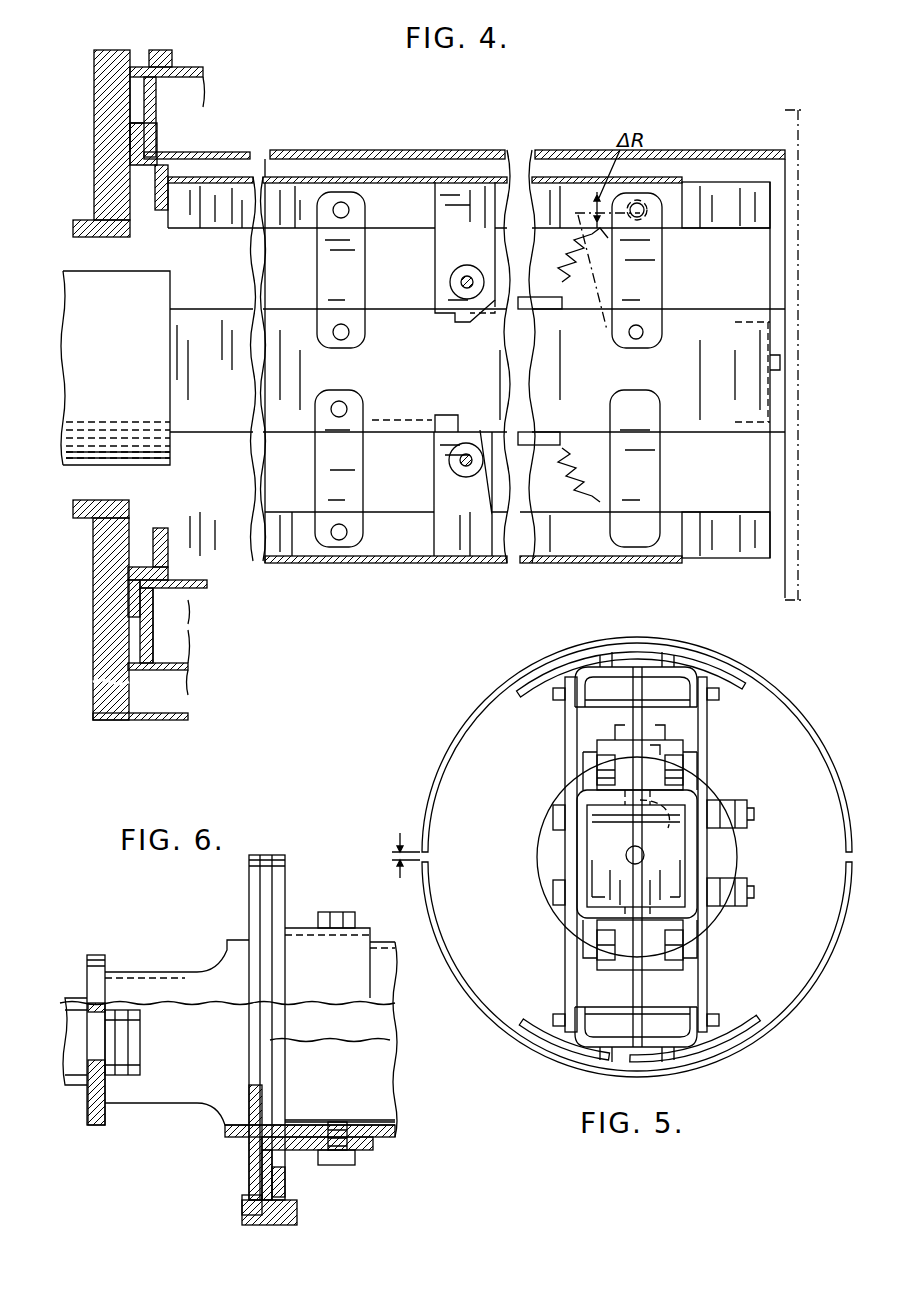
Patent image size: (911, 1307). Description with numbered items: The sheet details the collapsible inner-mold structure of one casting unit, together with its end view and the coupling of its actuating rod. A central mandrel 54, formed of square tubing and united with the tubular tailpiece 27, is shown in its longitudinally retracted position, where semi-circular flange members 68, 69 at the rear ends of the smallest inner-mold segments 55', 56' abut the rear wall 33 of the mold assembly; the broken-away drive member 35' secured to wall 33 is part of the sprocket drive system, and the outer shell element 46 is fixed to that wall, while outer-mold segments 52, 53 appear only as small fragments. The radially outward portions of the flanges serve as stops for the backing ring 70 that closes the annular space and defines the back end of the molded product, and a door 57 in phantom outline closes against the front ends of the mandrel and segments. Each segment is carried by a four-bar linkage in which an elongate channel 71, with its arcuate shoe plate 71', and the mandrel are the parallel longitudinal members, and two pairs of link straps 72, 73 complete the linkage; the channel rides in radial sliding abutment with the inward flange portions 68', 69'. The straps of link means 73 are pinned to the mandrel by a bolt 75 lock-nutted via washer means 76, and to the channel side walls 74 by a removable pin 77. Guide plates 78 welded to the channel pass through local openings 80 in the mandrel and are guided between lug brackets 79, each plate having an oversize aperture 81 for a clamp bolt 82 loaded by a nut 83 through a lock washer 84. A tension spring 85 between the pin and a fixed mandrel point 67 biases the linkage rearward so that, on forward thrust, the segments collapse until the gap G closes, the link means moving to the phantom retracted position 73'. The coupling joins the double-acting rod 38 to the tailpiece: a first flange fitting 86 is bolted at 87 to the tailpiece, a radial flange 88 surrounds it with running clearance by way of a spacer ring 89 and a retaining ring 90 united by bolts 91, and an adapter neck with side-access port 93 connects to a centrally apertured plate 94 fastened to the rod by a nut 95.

In FIG. 4, the tubular tailpiece 27 is at (118, 366).
In FIG. 5, the tubular tailpiece 27 is at (566, 910).
In FIG. 6, the tubular tailpiece 27 is at (385, 1137).
In FIG. 4, the rear wall 33 is at (94, 72).
In FIG. 4, the drive member 35' is at (89, 373).
In FIG. 6, the double-acting rod 38 is at (70, 998).
In FIG. 4, the outer shell element 46 is at (140, 720).
In FIG. 4, the outer-mold segment 52 is at (153, 665).
In FIG. 4, the outer-mold segment 53 is at (200, 67).
In FIG. 4, the central mandrel 54 is at (210, 309).
In FIG. 5, the central mandrel 54 is at (660, 902).
In FIG. 4, the inner-mold segment 55' is at (527, 138).
In FIG. 5, the inner-mold segment 55' is at (637, 744).
In FIG. 4, the inner-mold segment 56' is at (195, 598).
In FIG. 5, the inner-mold segment 56' is at (637, 969).
In FIG. 4, the door 57 is at (800, 224).
In FIG. 4, the pivot point 67 is at (790, 363).
In FIG. 5, the pivot point 67 is at (645, 856).
In FIG. 4, the semi-circular flange member 68 is at (104, 144).
In FIG. 4, the radially inward flange portion 68' is at (188, 191).
In FIG. 4, the semi-circular flange member 69 is at (109, 592).
In FIG. 4, the radially inward flange portion 69' is at (187, 540).
In FIG. 4, the backing ring 70 is at (156, 101).
In FIG. 4, the elongate channel 71 is at (519, 336).
In FIG. 5, the elongate channel 71 is at (633, 649).
In FIG. 5, the arcuate shoe plate 71' is at (658, 845).
In FIG. 4, the link means 72 is at (350, 268).
In FIG. 4, the link means 73 is at (661, 370).
In FIG. 5, the link means 73 is at (643, 854).
In FIG. 4, the retracted link position 73' is at (590, 260).
In FIG. 5, the channel side walls 74 is at (574, 705).
In FIG. 4, the bolt 75 is at (636, 325).
In FIG. 5, the bolt 75 is at (613, 823).
In FIG. 5, the washer means 76 is at (724, 800).
In FIG. 4, the pin 77 is at (637, 219).
In FIG. 5, the pin 77 is at (650, 718).
In FIG. 4, the guide plate 78 is at (435, 206).
In FIG. 5, the guide plate 78 is at (643, 732).
In FIG. 5, the lug bracket 79 is at (622, 750).
In FIG. 4, the local opening 80 is at (426, 420).
In FIG. 5, the local opening 80 is at (656, 814).
In FIG. 4, the oversize aperture 81 is at (466, 268).
In FIG. 4, the clamp bolt 82 is at (460, 283).
In FIG. 5, the clamp bolt 82 is at (597, 760).
In FIG. 5, the nut 83 is at (685, 760).
In FIG. 5, the lock washer 84 is at (660, 760).
In FIG. 4, the spring 85 is at (548, 297).
In FIG. 6, the first radial flange fitting 86 is at (283, 1160).
In FIG. 6, the bolt 87 is at (334, 912).
In FIG. 6, the radial flange 88 is at (249, 1145).
In FIG. 6, the spacer ring 89 is at (263, 1225).
In FIG. 6, the retaining ring 90 is at (286, 1180).
In FIG. 6, the bolts 91 is at (242, 1206).
In FIG. 6, the side-access port 93 is at (165, 1104).
In FIG. 6, the centrally apertured plate 94 is at (87, 1106).
In FIG. 6, the nut 95 is at (126, 1070).
In FIG. 5, the gap G is at (390, 850).